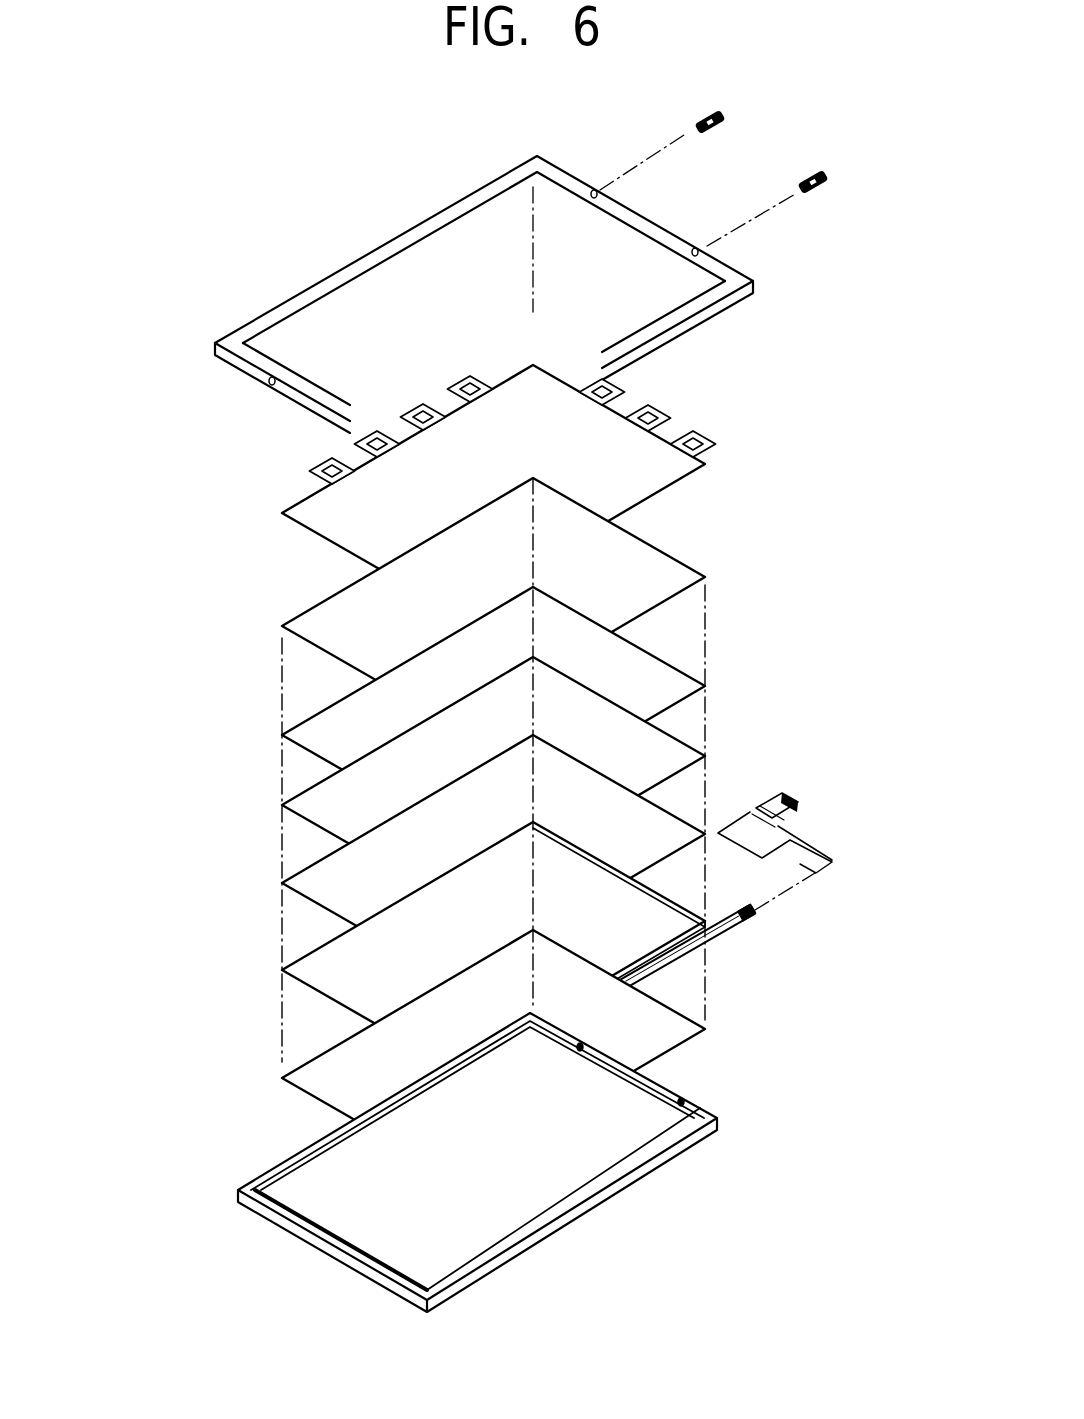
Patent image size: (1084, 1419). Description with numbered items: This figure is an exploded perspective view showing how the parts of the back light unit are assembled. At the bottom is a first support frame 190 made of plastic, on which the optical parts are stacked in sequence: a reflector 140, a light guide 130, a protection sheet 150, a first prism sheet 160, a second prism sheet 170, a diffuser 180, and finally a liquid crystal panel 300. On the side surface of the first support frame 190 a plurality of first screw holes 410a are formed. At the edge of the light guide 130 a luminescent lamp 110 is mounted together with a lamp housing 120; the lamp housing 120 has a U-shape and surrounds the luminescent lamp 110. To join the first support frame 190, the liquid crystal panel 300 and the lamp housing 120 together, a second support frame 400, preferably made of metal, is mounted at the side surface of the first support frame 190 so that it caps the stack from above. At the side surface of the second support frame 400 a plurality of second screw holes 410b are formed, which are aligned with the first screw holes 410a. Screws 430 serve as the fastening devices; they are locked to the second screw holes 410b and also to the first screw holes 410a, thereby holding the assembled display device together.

The second support frame 400 is at (283, 303).
The second screw holes 410b is at (271, 384).
The screws 430 is at (727, 125).
The liquid crystal panel 300 is at (668, 422).
The diffuser 180 is at (690, 570).
The second prism sheet 170 is at (300, 723).
The first prism sheet 160 is at (283, 803).
The protection sheet 150 is at (292, 880).
The light guide 130 is at (284, 972).
The luminescent lamp 110 is at (746, 926).
The lamp housing 120 is at (743, 905).
The reflector 140 is at (292, 1083).
The first screw holes 410a is at (685, 1101).
The first support frame 190 is at (300, 1228).